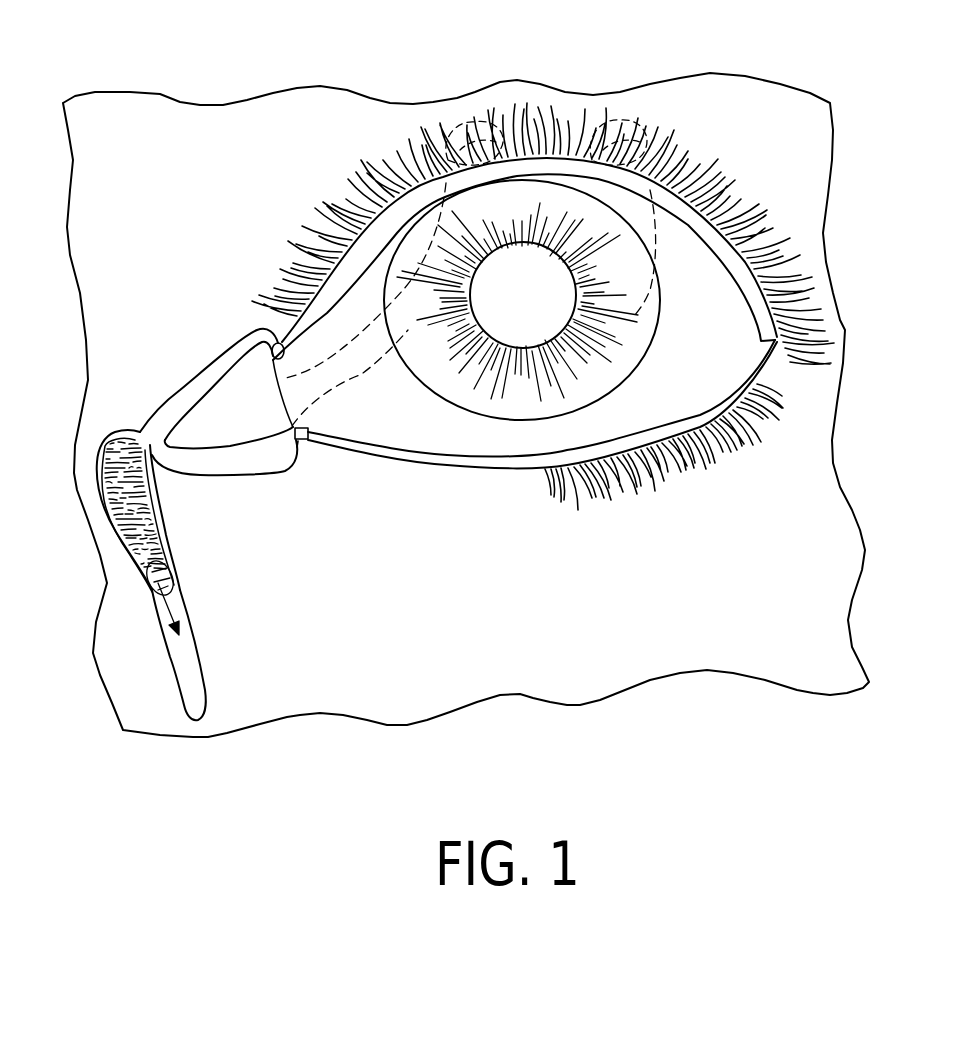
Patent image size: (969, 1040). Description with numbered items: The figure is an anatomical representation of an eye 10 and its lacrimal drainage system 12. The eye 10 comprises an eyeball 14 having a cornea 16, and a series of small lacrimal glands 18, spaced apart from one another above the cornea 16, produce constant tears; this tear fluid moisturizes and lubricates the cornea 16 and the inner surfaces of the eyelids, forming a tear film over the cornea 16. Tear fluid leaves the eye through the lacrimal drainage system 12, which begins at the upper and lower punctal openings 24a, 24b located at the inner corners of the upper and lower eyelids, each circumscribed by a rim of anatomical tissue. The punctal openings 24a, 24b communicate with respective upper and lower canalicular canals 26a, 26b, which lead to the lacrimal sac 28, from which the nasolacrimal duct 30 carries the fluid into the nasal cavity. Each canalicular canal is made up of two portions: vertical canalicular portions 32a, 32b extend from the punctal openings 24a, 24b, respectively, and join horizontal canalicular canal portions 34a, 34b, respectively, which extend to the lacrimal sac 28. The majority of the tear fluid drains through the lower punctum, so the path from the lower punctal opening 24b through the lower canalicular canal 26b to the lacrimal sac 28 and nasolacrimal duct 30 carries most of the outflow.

The eye 10 is at (258, 206).
The lacrimal drainage system 12 is at (128, 415).
The eyeball 14 is at (675, 320).
The cornea 16 is at (443, 443).
The lacrimal glands 18 is at (470, 112).
The upper punctal opening 24a is at (279, 340).
The lower punctal opening 24b is at (310, 442).
The upper canalicular canal 26a is at (191, 360).
The lower canalicular canal 26b is at (268, 490).
The lacrimal sac 28 is at (100, 490).
The nasolacrimal duct 30 is at (196, 722).
The vertical canalicular portion 32a is at (259, 334).
The vertical canalicular portion 32b is at (308, 443).
The horizontal canalicular canal portion 34a is at (227, 348).
The horizontal canalicular canal portion 34b is at (215, 478).